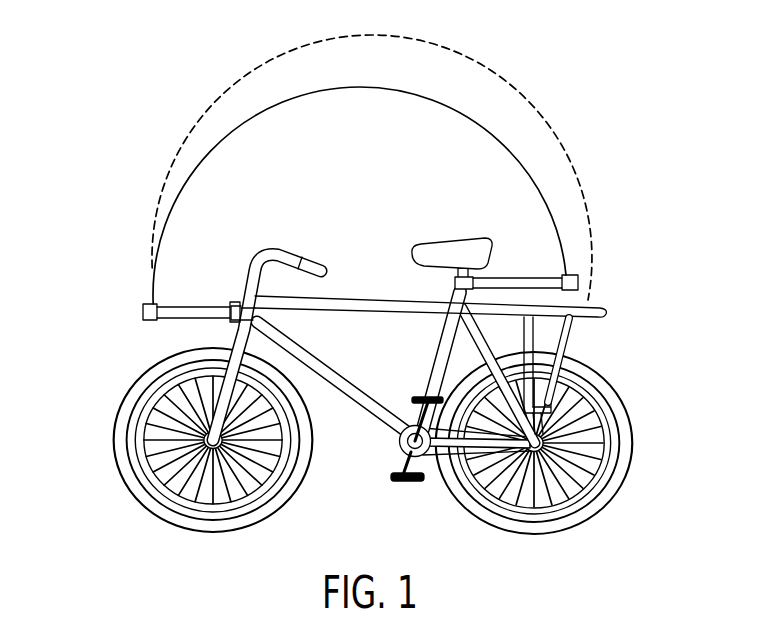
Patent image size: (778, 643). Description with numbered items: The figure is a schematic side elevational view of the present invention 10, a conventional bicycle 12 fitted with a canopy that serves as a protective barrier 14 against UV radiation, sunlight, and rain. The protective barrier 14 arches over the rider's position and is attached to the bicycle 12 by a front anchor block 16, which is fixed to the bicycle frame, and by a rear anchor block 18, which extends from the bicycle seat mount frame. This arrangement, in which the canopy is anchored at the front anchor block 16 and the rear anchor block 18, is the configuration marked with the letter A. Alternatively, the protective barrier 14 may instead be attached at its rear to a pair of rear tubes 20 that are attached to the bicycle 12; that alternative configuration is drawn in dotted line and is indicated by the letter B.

The present invention 10 is at (351, 274).
The conventional bicycle 12 is at (618, 300).
The protective barrier 14 is at (458, 108).
The front anchor block 16 is at (194, 306).
The rear anchor block 18 is at (513, 276).
The rear tubes 20 is at (570, 326).
The configuration A is at (474, 147).
The alternative configuration B is at (555, 100).